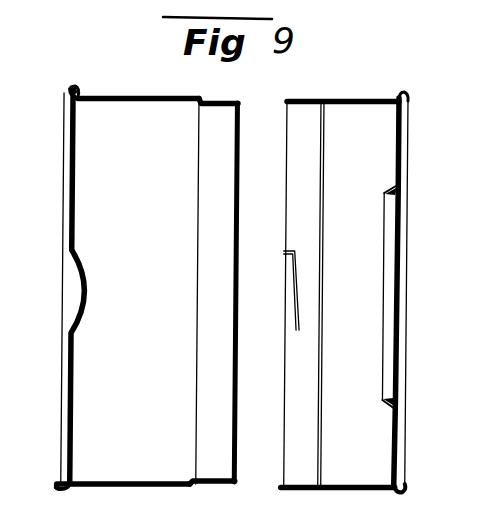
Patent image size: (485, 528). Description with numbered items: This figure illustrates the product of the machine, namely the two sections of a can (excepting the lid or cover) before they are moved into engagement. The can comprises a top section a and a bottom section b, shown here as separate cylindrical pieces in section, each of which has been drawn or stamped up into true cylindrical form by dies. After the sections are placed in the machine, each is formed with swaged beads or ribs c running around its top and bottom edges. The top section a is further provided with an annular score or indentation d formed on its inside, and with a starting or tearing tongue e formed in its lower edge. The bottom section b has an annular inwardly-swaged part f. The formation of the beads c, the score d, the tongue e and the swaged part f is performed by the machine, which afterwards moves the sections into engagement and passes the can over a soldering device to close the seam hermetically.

The top section a is at (345, 295).
The bottom section b is at (136, 283).
The swaged beads or ribs c is at (67, 93).
The annular score or indentation d is at (324, 350).
The starting or tearing tongue e is at (287, 282).
The annular inwardly-swaged part f is at (214, 292).